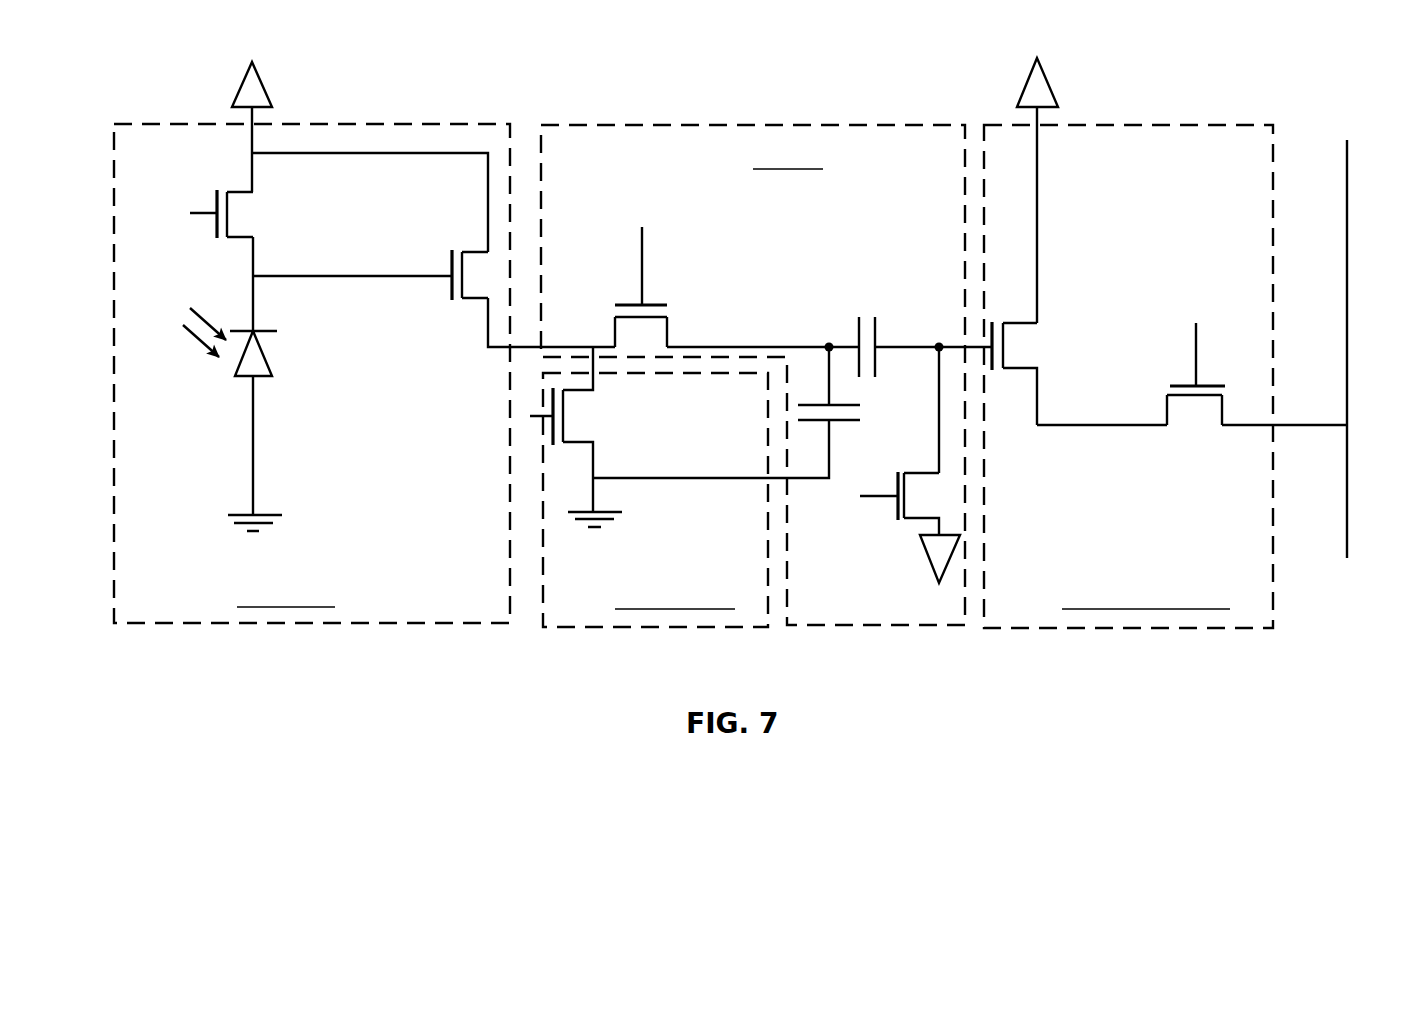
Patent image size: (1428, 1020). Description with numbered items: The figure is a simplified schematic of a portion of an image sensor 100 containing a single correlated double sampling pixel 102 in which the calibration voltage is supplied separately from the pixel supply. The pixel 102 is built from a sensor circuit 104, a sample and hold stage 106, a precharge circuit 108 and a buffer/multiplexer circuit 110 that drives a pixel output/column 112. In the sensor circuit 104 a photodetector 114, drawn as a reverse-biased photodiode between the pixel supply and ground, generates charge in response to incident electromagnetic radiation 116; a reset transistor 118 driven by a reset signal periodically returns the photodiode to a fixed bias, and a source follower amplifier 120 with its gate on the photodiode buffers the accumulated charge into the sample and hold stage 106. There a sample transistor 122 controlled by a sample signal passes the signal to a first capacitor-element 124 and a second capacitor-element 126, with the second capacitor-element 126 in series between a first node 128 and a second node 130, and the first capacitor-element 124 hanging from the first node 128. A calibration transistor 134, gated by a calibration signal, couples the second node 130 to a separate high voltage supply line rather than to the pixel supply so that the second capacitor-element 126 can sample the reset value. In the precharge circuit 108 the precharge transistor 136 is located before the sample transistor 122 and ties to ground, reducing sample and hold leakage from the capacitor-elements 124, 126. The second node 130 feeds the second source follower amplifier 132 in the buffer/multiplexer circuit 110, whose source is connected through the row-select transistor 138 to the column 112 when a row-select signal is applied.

The image sensor 100 is at (172, 86).
The correlated double sampling (CDS) pixel 102 is at (1158, 351).
The sensor circuit 104 is at (172, 607).
The sample and hold (S/H) stage 106 is at (733, 169).
The precharge circuit 108 is at (590, 609).
The buffer/multiplexer circuit 110 is at (1038, 609).
The pixel output/column 112 is at (1349, 535).
The photodetector 114 is at (266, 345).
The electromagnetic radiation 116 is at (199, 340).
The reset transistor 118 is at (200, 192).
The source follower amplifier 120 is at (432, 262).
The sample transistor 122 is at (616, 295).
The capacitor-element C1 124 is at (804, 404).
The capacitor-element C2 126 is at (878, 322).
The first node 128 is at (826, 344).
The second node 130 is at (937, 350).
The second source follower amplifier 132 is at (1049, 343).
The calibration transistor 134 is at (888, 535).
The precharge transistor 136 is at (553, 458).
The row-select transistor 138 is at (1189, 436).